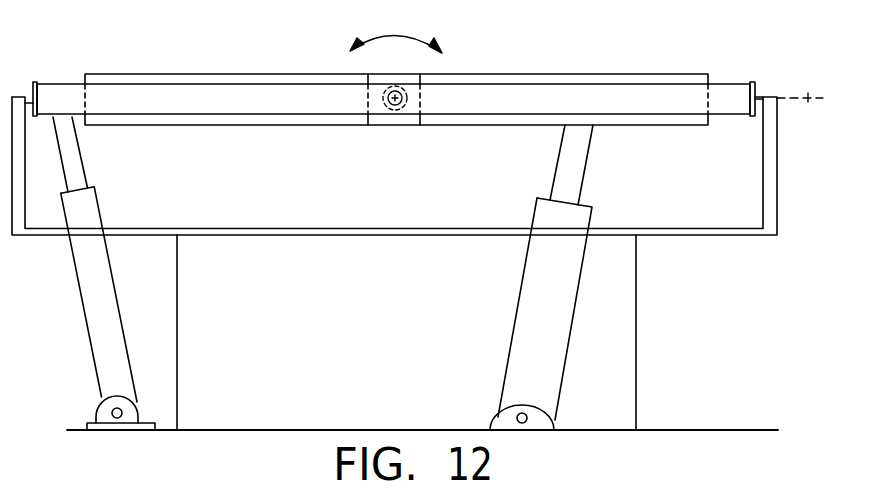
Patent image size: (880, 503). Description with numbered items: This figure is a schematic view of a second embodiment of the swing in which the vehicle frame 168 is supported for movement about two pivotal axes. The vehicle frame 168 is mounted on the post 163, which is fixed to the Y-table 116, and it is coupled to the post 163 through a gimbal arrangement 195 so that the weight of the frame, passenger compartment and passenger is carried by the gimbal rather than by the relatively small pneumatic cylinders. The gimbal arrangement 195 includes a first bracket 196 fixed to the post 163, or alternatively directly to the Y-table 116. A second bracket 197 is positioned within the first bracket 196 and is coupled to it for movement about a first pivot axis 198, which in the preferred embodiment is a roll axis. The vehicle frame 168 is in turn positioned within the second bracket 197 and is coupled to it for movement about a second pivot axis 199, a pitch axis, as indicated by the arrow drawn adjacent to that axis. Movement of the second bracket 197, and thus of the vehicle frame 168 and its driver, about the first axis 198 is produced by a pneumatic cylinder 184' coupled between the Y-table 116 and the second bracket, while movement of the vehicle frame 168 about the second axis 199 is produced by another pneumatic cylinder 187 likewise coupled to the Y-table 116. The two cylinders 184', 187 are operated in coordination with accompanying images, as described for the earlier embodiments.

The Y-table 116 is at (683, 429).
The post 163 is at (637, 308).
The vehicle frame 168 is at (590, 74).
The pneumatic cylinder 184' is at (105, 273).
The pneumatic cylinder 187 is at (515, 317).
The gimbal arrangement 195 is at (787, 128).
The first bracket 196 is at (777, 170).
The second bracket 197 is at (722, 83).
The first pivot axis 198 is at (808, 97).
The second pivot axis 199 is at (402, 100).